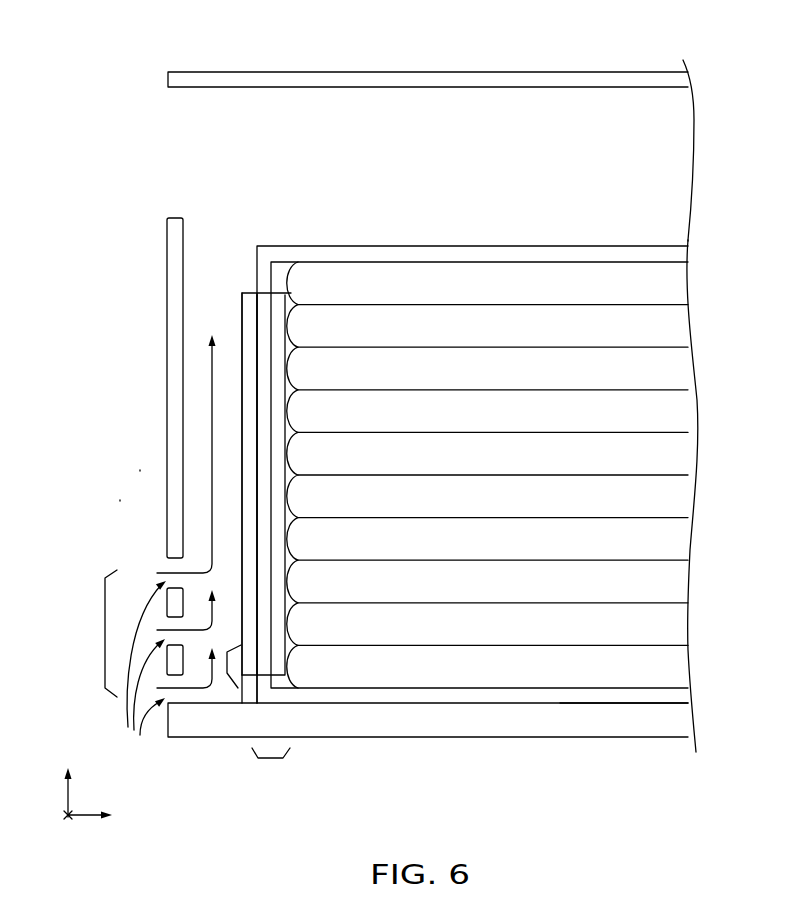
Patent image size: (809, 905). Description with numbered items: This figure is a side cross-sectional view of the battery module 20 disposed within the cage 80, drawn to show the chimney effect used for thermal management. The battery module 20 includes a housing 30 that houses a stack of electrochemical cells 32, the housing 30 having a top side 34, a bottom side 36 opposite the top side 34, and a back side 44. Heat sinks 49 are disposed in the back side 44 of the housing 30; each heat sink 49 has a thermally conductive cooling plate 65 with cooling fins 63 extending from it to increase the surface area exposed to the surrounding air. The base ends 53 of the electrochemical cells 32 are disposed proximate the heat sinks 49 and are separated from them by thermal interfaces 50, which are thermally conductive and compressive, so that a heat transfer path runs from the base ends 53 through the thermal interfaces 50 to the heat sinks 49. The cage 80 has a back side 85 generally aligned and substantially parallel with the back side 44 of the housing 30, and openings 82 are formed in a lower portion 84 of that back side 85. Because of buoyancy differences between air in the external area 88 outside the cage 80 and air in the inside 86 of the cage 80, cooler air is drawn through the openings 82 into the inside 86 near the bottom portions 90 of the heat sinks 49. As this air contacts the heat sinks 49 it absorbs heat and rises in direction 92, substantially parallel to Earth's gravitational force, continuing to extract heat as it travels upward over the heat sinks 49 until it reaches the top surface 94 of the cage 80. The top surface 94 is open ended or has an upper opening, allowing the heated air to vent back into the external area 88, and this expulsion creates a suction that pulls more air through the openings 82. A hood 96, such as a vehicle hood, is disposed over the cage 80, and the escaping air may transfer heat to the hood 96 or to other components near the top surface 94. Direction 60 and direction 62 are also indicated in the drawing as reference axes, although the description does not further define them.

The battery module 20 is at (580, 210).
The housing 30 is at (462, 262).
The electrochemical cells 32 is at (672, 672).
The top side 34 is at (425, 246).
The bottom side 36 is at (588, 708).
The back side 44 is at (235, 285).
The heat sinks 49 is at (265, 760).
The thermal interfaces 50 is at (283, 295).
The base ends 53 is at (290, 540).
The x direction 60 is at (78, 812).
The z direction 62 is at (68, 820).
The cooling fins 63 is at (250, 293).
The thermally conductive cooling plate 65 is at (265, 293).
The cage 80 is at (493, 740).
The openings 82 is at (144, 672).
The lower portion 84 is at (103, 632).
The back side 85 is at (132, 459).
The inside 86 is at (215, 314).
The external area 88 is at (97, 506).
The bottom portions 90 is at (227, 675).
The direction 92 is at (65, 797).
The top surface 94 is at (175, 217).
The hood 96 is at (428, 72).